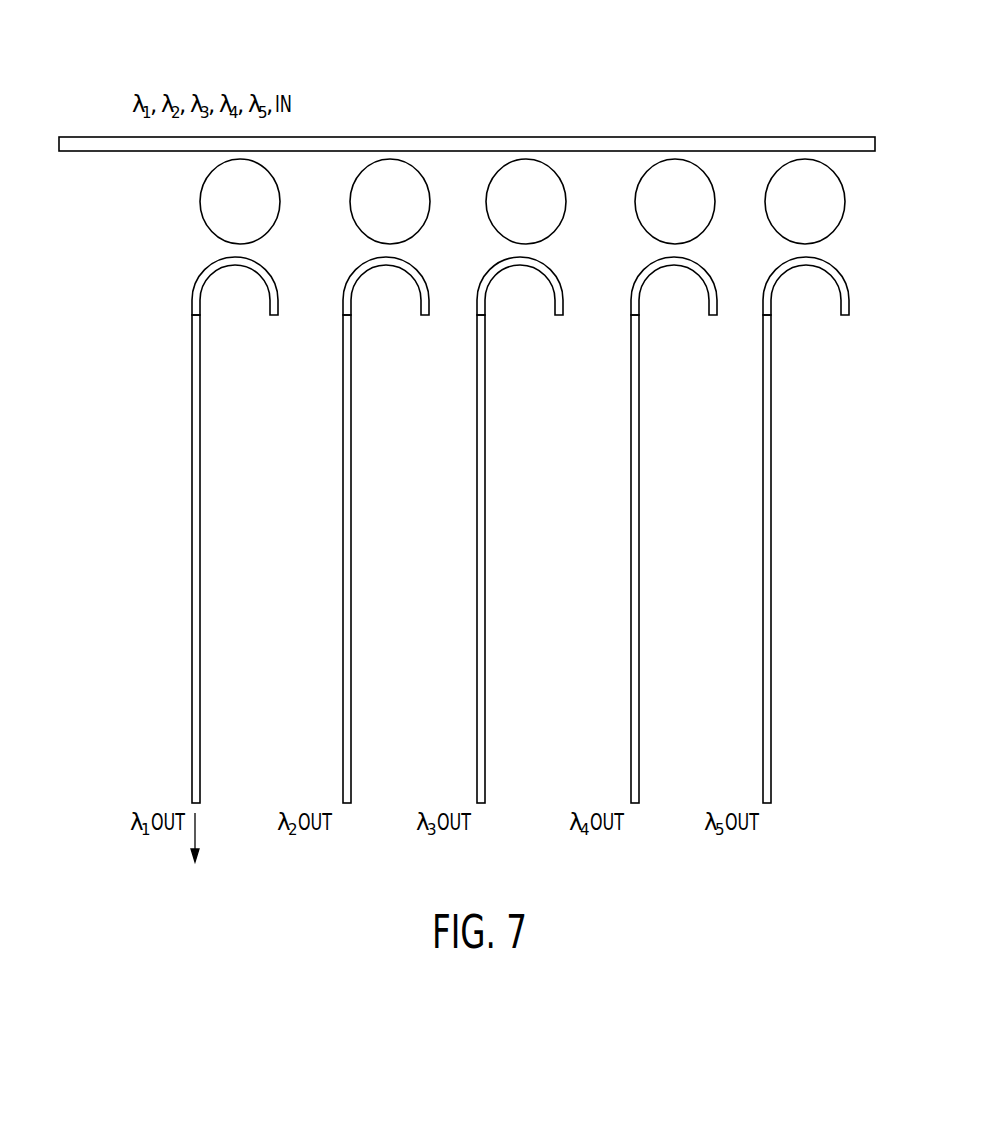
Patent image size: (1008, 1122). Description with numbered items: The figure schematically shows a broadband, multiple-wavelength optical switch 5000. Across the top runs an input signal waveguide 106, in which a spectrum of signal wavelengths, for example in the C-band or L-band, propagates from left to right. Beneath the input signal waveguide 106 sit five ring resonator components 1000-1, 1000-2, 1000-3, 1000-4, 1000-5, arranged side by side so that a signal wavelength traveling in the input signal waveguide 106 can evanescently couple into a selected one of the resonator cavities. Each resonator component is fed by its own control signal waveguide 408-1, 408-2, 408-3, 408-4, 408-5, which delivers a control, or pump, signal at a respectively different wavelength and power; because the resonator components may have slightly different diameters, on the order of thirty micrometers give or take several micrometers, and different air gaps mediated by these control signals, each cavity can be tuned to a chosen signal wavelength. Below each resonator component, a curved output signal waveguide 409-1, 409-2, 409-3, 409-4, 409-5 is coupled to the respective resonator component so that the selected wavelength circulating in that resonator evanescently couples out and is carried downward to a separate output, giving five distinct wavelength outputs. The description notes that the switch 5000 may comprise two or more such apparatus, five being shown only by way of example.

The broadband wavelength optical switch 5000 is at (578, 56).
The input signal waveguide 106 is at (112, 118).
The control signal waveguide 408-1 is at (213, 160).
The control signal waveguide 408-2 is at (363, 160).
The control signal waveguide 408-3 is at (499, 160).
The control signal waveguide 408-4 is at (648, 160).
The control signal waveguide 408-5 is at (778, 160).
The ring resonator component 1000-1 is at (204, 218).
The ring resonator component 1000-2 is at (354, 218).
The ring resonator component 1000-3 is at (490, 218).
The ring resonator component 1000-4 is at (639, 218).
The ring resonator component 1000-5 is at (772, 218).
The output signal waveguide 409-1 is at (192, 458).
The output signal waveguide 409-2 is at (343, 458).
The output signal waveguide 409-3 is at (477, 458).
The output signal waveguide 409-4 is at (631, 458).
The output signal waveguide 409-5 is at (763, 458).